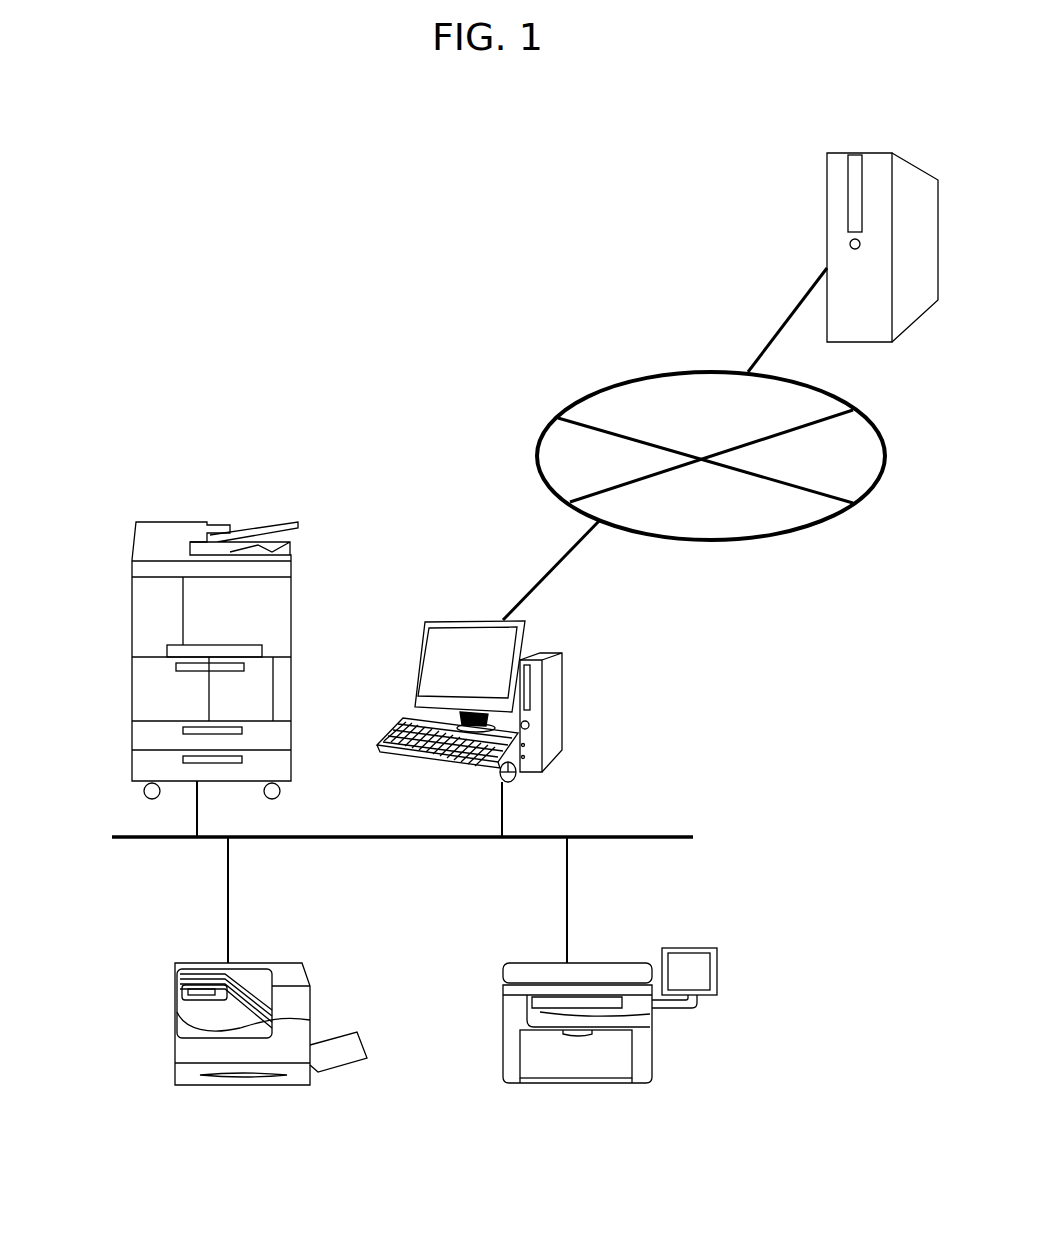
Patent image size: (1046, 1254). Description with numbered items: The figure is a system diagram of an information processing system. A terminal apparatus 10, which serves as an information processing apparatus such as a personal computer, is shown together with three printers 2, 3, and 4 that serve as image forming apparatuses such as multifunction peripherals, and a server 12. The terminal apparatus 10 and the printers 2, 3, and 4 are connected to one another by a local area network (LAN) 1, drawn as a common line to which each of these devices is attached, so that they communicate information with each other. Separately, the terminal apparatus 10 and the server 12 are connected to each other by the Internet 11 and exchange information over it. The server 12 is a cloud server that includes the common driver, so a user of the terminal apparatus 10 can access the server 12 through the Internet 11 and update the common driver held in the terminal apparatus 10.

The local area network (LAN) 1 is at (635, 834).
The printer 2 is at (502, 1012).
The printer 3 is at (175, 1015).
The printer 4 is at (132, 627).
The terminal apparatus 10 is at (560, 659).
The Internet 11 is at (542, 432).
The server 12 is at (827, 184).